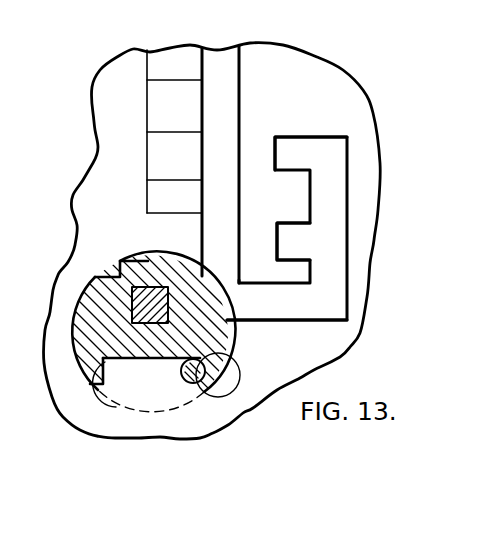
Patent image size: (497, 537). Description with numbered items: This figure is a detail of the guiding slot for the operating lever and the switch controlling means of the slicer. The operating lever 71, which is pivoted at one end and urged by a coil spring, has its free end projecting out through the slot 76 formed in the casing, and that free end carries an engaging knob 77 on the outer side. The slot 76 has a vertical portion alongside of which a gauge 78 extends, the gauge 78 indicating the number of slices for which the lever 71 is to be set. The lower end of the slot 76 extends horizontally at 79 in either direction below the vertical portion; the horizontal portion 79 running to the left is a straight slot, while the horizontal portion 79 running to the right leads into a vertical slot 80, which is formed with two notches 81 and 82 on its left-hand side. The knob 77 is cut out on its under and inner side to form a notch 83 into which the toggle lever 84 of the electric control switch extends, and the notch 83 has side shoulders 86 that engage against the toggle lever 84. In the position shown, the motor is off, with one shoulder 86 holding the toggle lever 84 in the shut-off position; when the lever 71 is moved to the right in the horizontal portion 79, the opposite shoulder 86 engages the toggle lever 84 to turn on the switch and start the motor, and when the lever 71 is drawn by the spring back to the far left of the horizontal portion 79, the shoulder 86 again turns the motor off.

The operating lever 71 is at (118, 263).
The slot 76 is at (222, 110).
The engaging knob 77 is at (100, 359).
The gauge 78 is at (166, 80).
The horizontal portion of the slot 79 is at (272, 322).
The vertical slot 80 is at (332, 260).
The notch 81 is at (285, 245).
The notch 82 is at (293, 153).
The notch 83 is at (137, 366).
The toggle lever 84 is at (193, 384).
The side shoulders 86 is at (118, 368).